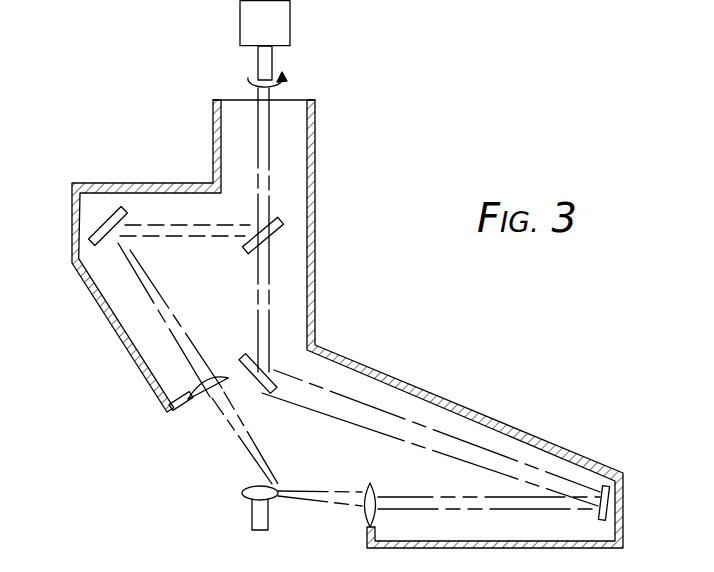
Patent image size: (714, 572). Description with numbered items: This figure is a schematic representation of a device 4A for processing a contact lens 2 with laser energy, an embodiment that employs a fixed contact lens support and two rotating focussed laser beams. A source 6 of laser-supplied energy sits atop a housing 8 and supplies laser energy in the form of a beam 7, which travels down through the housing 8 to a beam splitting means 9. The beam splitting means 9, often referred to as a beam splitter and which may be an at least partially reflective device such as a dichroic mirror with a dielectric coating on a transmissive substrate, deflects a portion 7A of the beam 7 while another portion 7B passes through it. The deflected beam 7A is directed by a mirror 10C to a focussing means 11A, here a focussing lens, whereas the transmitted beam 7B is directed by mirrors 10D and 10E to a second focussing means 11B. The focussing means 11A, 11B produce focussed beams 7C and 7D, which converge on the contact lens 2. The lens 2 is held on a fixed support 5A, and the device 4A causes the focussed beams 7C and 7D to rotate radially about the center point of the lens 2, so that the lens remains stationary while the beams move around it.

The contact lens 2 is at (243, 491).
The device 4A is at (414, 370).
The fixed support 5A is at (250, 525).
The source of laser-supplied energy 6 is at (292, 22).
The beam 7 is at (270, 136).
The beam portion 7A is at (221, 238).
The beam portion 7B is at (285, 303).
The focussed beam 7C is at (243, 448).
The focussed beam 7D is at (310, 505).
The housing 8 is at (155, 183).
The beam splitting means 9 is at (262, 212).
The mirror 10C is at (103, 224).
The mirror 10D is at (243, 359).
The mirror 10E is at (611, 503).
The focussing means 11A is at (203, 398).
The focussing means 11B is at (378, 487).